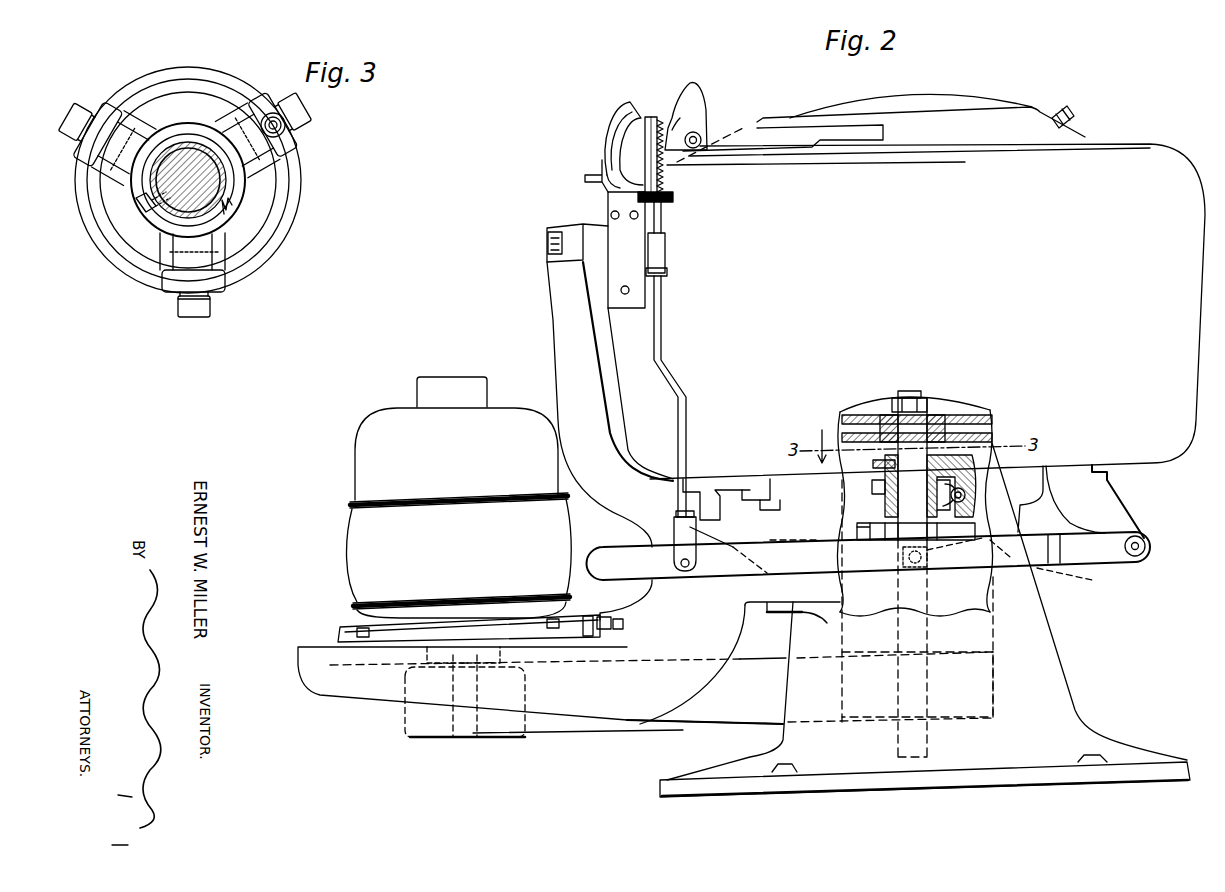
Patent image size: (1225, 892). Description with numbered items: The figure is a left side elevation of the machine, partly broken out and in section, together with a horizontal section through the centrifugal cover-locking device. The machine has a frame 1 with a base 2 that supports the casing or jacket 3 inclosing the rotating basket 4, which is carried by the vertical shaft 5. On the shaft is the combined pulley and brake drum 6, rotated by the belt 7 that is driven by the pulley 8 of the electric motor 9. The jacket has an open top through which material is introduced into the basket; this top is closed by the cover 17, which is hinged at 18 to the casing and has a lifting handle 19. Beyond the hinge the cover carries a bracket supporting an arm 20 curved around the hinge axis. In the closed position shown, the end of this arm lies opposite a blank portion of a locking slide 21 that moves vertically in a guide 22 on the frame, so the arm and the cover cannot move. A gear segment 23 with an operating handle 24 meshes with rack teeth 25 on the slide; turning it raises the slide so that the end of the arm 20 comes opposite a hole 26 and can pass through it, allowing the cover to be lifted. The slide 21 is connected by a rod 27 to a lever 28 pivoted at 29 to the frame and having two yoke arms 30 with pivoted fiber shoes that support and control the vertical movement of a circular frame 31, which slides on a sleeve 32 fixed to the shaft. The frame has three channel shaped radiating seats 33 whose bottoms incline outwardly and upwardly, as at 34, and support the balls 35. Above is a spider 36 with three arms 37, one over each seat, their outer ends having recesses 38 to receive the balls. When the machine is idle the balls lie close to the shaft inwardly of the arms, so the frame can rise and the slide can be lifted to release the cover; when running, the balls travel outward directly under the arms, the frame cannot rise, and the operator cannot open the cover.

In FIG. 2, the frame 1 is at (680, 778).
In FIG. 2, the base 2 is at (1040, 613).
In FIG. 2, the casing or jacket 3 is at (1183, 415).
In FIG. 3, the rotating basket 4 is at (187, 162).
In FIG. 2, the rotating basket 4 is at (930, 412).
In FIG. 2, the vertical shaft 5 is at (950, 466).
In FIG. 2, the combined pulley and brake drum 6 is at (990, 670).
In FIG. 2, the belt 7 is at (706, 718).
In FIG. 2, the pulley 8 is at (440, 740).
In FIG. 2, the electric motor 9 is at (480, 520).
In FIG. 2, the cover 17 is at (975, 106).
In FIG. 2, the hinge 18 is at (701, 135).
In FIG. 2, the lifting handle 19 is at (1070, 110).
In FIG. 2, the arm 20 is at (604, 166).
In FIG. 2, the locking slide 21 is at (653, 117).
In FIG. 2, the guide 22 is at (672, 204).
In FIG. 2, the gear segment 23 is at (667, 157).
In FIG. 2, the operating handle 24 is at (705, 108).
In FIG. 2, the rack teeth 25 is at (663, 173).
In FIG. 2, the hole 26 is at (668, 252).
In FIG. 2, the rod 27 is at (688, 458).
In FIG. 2, the lever 28 is at (713, 585).
In FIG. 2, the pivot 29 is at (1147, 547).
In FIG. 2, the yoke arms 30 is at (1040, 568).
In FIG. 3, the circular frame 31 is at (290, 247).
In FIG. 2, the circular frame 31 is at (975, 523).
In FIG. 2, the sleeve 32 is at (883, 483).
In FIG. 3, the channel shaped radiating seats 33 is at (298, 166).
In FIG. 2, the inclined seat bottom 34 is at (1020, 513).
In FIG. 3, the balls 35 is at (289, 124).
In FIG. 2, the balls 35 is at (966, 494).
In FIG. 3, the spider 36 is at (233, 206).
In FIG. 2, the spider 36 is at (873, 462).
In FIG. 3, the arms 37 is at (212, 311).
In FIG. 2, the arms 37 is at (964, 500).
In FIG. 2, the recesses 38 is at (1048, 484).